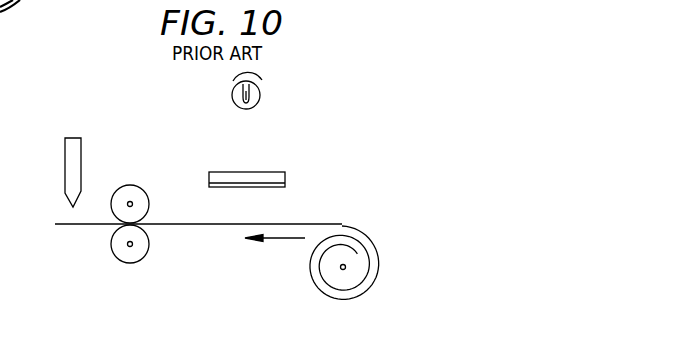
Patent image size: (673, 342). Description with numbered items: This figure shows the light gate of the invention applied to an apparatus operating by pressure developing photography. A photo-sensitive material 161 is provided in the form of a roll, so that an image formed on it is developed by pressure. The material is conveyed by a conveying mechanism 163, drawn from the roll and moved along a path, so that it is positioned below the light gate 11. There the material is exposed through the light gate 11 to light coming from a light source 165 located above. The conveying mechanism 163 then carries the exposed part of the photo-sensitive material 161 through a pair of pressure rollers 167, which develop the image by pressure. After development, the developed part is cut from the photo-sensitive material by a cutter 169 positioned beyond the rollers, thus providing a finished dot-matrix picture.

The light gate 11 is at (278, 179).
The photo-sensitive material 161 is at (328, 225).
The conveying mechanism 163 is at (345, 268).
The light source 165 is at (260, 95).
The pair of pressure rollers 167 is at (130, 192).
The cutter 169 is at (67, 154).